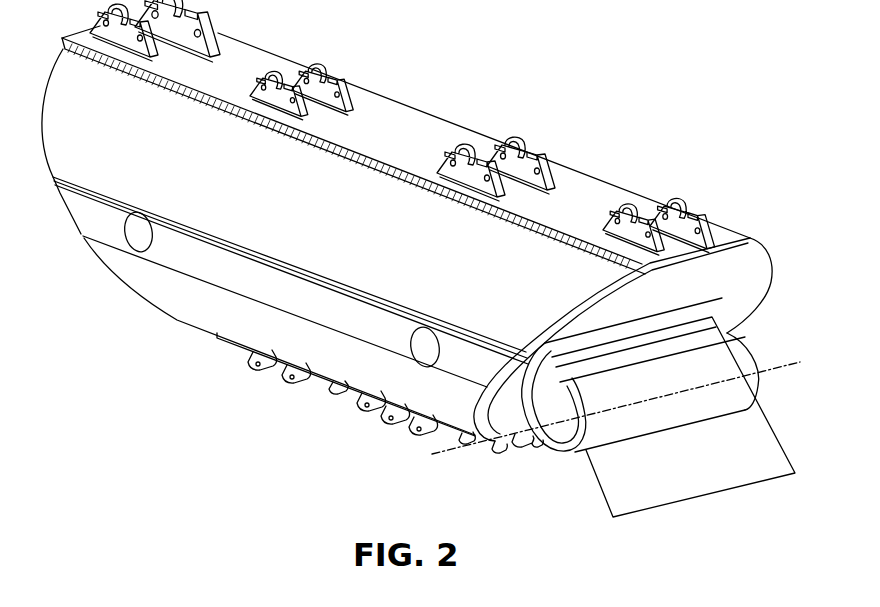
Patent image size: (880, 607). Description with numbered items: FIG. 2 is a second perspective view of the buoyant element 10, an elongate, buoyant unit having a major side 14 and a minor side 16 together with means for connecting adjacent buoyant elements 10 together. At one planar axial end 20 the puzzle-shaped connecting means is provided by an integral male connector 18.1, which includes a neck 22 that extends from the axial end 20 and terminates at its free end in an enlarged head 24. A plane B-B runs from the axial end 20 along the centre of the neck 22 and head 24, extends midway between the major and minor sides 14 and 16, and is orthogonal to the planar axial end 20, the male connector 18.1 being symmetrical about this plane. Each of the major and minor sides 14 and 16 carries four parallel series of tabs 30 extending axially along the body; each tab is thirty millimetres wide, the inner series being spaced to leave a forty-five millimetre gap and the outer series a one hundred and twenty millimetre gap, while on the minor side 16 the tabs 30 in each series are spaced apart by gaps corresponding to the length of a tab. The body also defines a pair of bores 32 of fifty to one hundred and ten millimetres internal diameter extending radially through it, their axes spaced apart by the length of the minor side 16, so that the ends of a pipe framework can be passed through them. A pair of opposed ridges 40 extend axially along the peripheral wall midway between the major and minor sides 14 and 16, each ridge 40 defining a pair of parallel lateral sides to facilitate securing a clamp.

The buoyant element 10 is at (524, 98).
The major side 14 is at (380, 132).
The minor side 16 is at (320, 378).
The male connector 18.1 is at (558, 430).
The axial end 20 is at (718, 270).
The neck 22 is at (530, 400).
The enlarged head 24 is at (563, 440).
The tabs 30 is at (557, 153).
The bores 32 is at (133, 236).
The ridge 40 is at (200, 256).